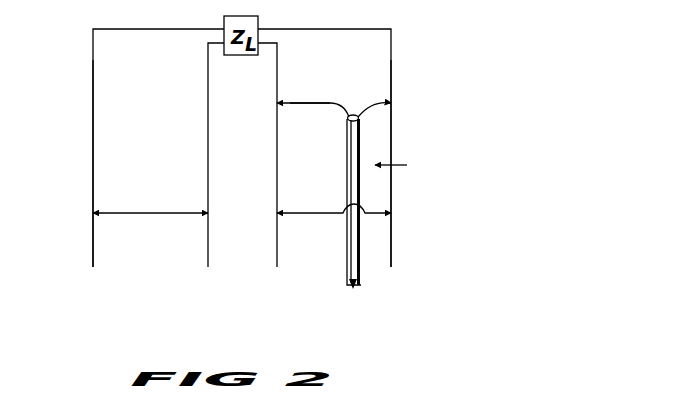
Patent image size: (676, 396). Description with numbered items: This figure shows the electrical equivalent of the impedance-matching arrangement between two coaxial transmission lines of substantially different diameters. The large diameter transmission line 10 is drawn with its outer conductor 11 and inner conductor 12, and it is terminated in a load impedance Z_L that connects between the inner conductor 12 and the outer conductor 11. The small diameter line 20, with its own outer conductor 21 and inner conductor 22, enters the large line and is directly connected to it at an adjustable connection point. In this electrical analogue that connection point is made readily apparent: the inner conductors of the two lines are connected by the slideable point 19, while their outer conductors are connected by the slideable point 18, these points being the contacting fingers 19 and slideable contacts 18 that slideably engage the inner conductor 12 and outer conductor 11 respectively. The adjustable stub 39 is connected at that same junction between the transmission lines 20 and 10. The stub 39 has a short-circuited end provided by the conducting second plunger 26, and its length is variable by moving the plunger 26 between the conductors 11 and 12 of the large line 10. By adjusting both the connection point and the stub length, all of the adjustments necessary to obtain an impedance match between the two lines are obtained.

The large diameter transmission line 10 is at (81, 54).
The outer conductor 11 is at (93, 71).
The inner conductor 12 is at (277, 155).
The slideable contacts 18 is at (387, 101).
The contacting fingers 19 is at (313, 94).
The small diameter line 20 is at (363, 268).
The outer conductor 21 is at (359, 120).
The inner conductor 22 is at (311, 103).
The second plunger 26 is at (306, 213).
The adjustable stub 39 is at (403, 166).